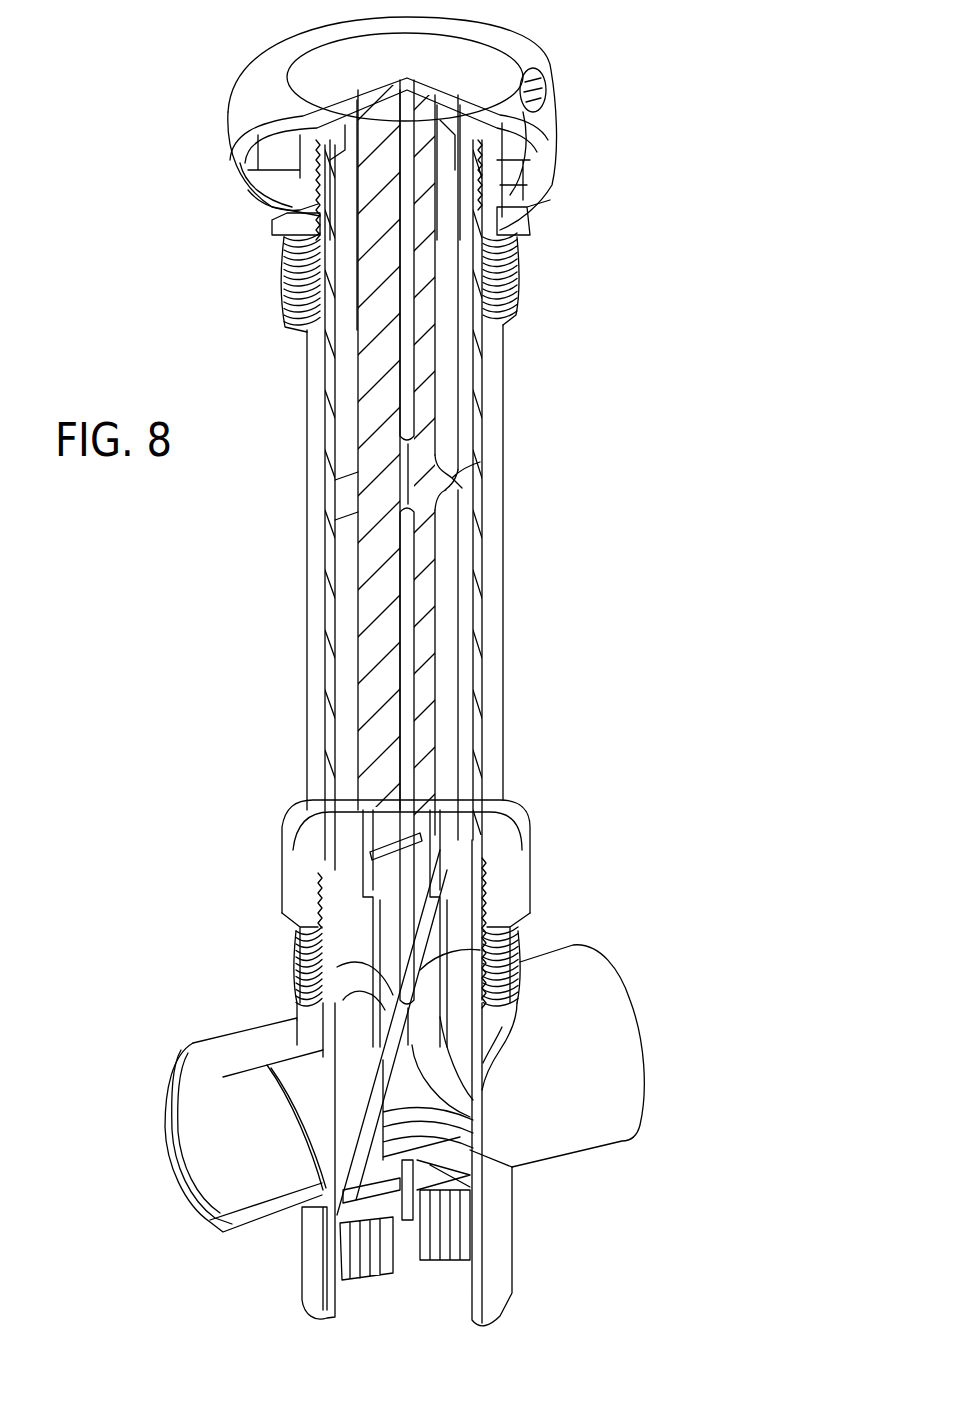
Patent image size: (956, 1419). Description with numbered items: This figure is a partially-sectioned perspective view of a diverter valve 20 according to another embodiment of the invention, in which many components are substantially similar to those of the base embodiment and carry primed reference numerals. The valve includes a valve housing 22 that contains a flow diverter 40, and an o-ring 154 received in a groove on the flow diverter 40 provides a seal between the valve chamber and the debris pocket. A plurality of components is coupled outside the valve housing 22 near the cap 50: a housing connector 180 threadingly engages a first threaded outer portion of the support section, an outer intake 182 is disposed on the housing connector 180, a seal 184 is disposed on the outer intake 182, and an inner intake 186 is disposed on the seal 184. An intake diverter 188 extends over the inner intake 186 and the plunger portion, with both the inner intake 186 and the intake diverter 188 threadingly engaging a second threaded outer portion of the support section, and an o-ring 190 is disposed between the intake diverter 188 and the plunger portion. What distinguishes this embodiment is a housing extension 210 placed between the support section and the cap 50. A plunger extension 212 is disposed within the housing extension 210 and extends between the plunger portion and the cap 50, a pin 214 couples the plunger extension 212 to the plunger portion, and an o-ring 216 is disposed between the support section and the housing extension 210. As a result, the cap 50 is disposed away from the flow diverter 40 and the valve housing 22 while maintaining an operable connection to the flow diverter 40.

The diverter valve 20 is at (670, 222).
The valve housing 22 is at (637, 1005).
The flow diverter 40 is at (392, 1003).
The cap 50 is at (517, 50).
The o-ring 154 is at (520, 926).
The housing connector 180 is at (520, 252).
The outer intake 182 is at (287, 211).
The seal 184 is at (513, 232).
The inner intake 186 is at (300, 178).
The intake diverter 188 is at (528, 126).
The o-ring 190 is at (403, 83).
The housing extension 210 is at (505, 589).
The plunger extension 212 is at (437, 483).
The pin 214 is at (386, 840).
The o-ring 216 is at (478, 851).